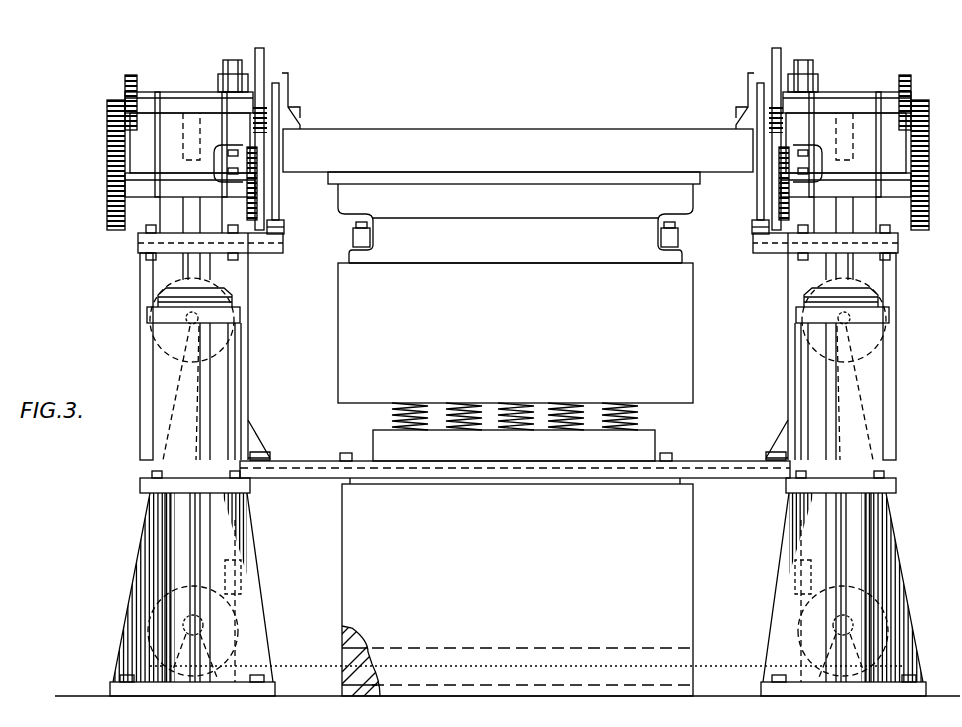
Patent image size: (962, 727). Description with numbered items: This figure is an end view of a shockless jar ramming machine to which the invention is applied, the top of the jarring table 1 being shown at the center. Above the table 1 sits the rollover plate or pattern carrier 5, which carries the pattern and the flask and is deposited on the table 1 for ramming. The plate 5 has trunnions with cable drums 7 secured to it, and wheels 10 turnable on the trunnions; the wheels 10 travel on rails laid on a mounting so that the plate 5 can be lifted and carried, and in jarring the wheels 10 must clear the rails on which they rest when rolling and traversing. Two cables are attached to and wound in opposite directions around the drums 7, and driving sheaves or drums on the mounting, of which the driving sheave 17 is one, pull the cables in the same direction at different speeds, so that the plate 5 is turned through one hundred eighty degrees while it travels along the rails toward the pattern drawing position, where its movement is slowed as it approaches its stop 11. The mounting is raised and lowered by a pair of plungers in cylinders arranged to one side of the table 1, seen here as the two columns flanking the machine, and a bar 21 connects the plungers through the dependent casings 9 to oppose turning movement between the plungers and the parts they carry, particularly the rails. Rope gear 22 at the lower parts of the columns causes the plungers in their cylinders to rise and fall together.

The table 1 is at (377, 172).
The rollover plate 5 is at (428, 129).
The cable drums 7 is at (260, 48).
The dependent casings 9 is at (252, 444).
The wheels 10 is at (232, 60).
The stop 11 is at (280, 197).
The driving sheave 17 is at (247, 210).
The bar 21 is at (330, 461).
The rope gear 22 is at (247, 518).